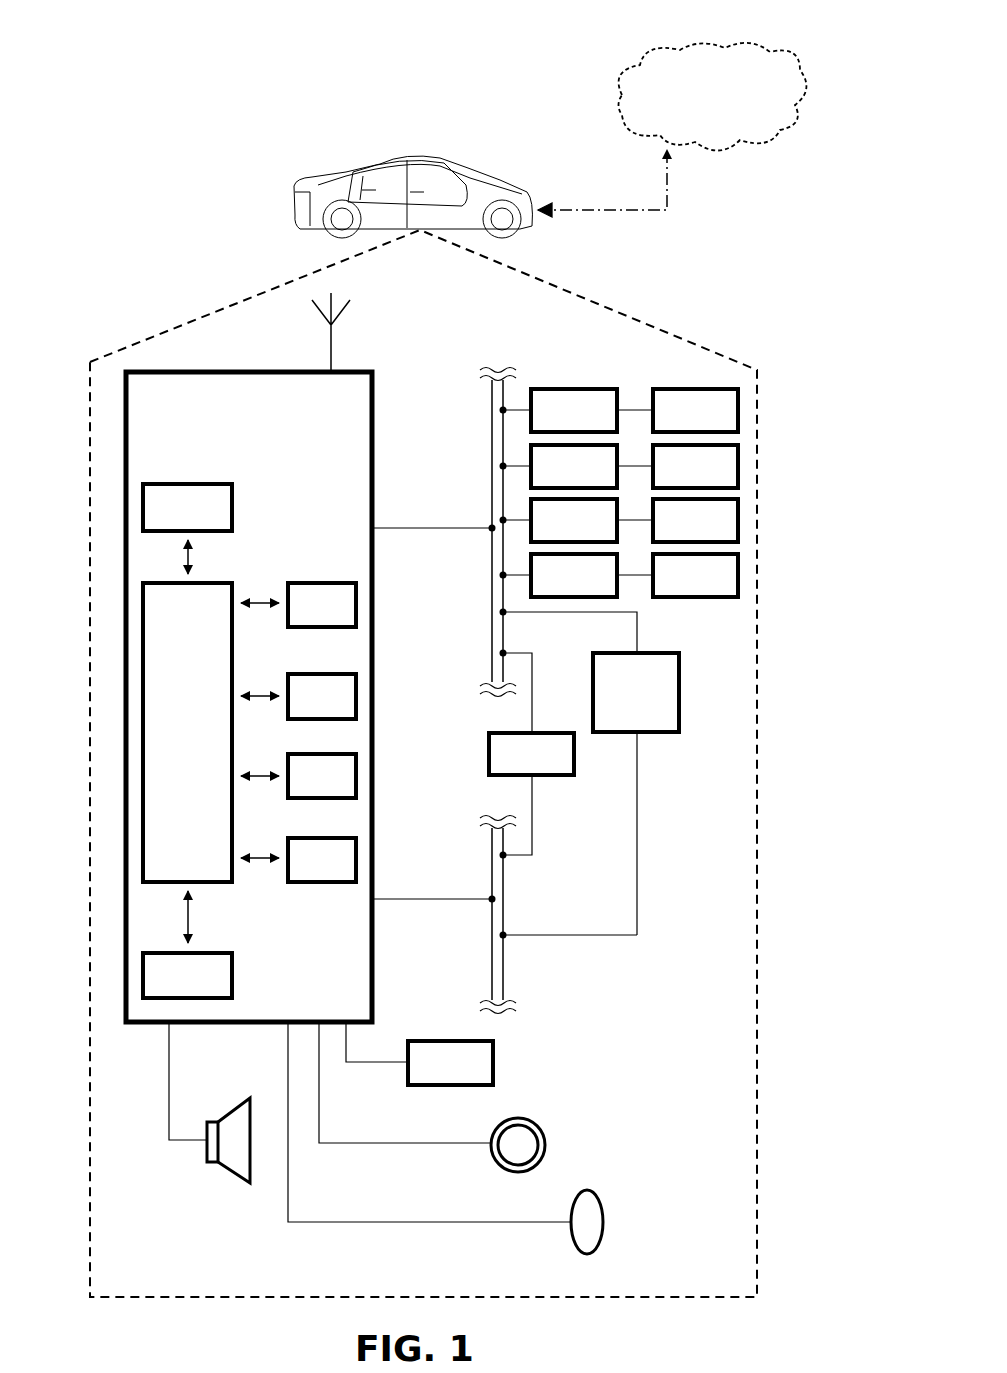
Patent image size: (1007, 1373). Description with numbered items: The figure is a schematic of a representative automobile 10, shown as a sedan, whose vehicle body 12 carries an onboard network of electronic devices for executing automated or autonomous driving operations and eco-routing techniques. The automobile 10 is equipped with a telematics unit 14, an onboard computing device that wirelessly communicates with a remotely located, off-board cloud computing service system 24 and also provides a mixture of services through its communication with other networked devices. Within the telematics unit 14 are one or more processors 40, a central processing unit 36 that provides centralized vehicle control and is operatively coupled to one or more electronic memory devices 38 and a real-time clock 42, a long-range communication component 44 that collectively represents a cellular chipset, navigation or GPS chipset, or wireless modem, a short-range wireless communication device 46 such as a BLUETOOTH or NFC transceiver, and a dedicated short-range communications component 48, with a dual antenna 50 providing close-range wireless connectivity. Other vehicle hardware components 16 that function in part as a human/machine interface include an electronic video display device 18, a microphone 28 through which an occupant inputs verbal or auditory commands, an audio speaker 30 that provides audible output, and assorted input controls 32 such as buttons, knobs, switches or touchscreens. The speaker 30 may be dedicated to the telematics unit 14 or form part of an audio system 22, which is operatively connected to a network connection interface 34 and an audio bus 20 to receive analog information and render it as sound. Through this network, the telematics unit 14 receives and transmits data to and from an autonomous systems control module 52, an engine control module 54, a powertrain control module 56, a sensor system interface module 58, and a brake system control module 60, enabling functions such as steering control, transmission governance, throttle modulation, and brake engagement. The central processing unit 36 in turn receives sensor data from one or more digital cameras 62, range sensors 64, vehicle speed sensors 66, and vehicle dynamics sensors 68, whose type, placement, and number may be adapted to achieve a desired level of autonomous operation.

The automobile 10 is at (135, 45).
The vehicle body 12 is at (322, 178).
The telematics unit 14 is at (374, 566).
The vehicle hardware components 16 is at (237, 300).
The electronic video display device 18 is at (419, 1053).
The audio bus 20 is at (490, 945).
The audio system 22 is at (636, 794).
The cloud computing service system 24 is at (672, 130).
The microphone 28 is at (600, 1202).
The audio speaker 30 is at (235, 1172).
The input controls 32 is at (546, 1140).
The network connection interface 34 is at (490, 600).
The central processing unit 36 is at (211, 741).
The electronic memory device 38 is at (187, 975).
The processor 40 is at (187, 507).
The real-time clock 42 is at (322, 605).
The long-range communication component 44 is at (322, 696).
The short-range wireless communication device 46 is at (322, 776).
The dedicated short-range communications component 48 is at (322, 860).
The dual antenna 50 is at (333, 348).
The autonomous systems control module 52 is at (574, 410).
The engine control module 54 is at (677, 410).
The powertrain control module 56 is at (531, 794).
The sensor system interface module 58 is at (574, 466).
The brake system control module 60 is at (677, 466).
The digital camera 62 is at (574, 520).
The range sensor 64 is at (677, 520).
The vehicle speed sensor 66 is at (574, 575).
The vehicle dynamics sensor 68 is at (677, 575).